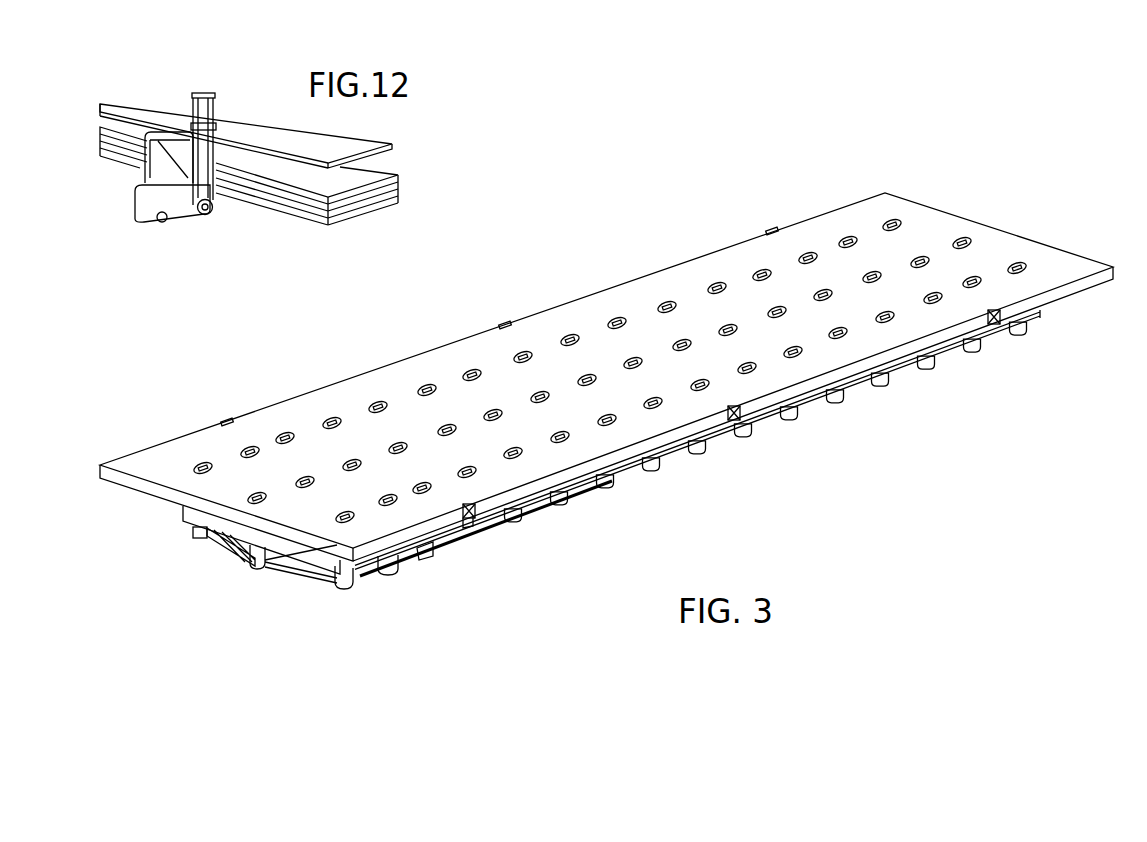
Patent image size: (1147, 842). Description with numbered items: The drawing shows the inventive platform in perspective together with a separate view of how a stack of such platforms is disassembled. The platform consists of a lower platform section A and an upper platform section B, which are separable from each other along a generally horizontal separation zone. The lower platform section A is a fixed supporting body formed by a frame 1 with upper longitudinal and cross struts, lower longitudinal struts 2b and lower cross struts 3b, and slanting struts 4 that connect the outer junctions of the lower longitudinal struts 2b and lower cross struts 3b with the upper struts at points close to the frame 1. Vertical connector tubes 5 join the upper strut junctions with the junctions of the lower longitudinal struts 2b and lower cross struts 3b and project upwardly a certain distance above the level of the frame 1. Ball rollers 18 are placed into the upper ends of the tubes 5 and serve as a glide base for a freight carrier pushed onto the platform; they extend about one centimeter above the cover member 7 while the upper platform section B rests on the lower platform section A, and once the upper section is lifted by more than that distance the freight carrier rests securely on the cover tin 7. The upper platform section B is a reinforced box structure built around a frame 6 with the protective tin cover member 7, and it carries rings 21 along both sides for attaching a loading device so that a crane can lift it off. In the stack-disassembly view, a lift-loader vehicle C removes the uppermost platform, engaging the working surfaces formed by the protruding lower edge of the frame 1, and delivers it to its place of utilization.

In FIG. 3, the frame 1 is at (218, 528).
In FIG. 3, the lower longitudinal struts 2b is at (541, 520).
In FIG. 3, the lower cross struts 3b is at (292, 572).
In FIG. 3, the slanting struts 4 is at (616, 483).
In FIG. 3, the vertical connector tubes 5 is at (351, 585).
In FIG. 3, the frame 6 is at (152, 490).
In FIG. 3, the protective tin cover member 7 is at (365, 385).
In FIG. 3, the ball rollers 18 is at (964, 240).
In FIG. 3, the rings 21 is at (224, 420).
In FIG. 12, the lower platform section A is at (343, 140).
In FIG. 3, the lower platform section A is at (862, 380).
In FIG. 12, the upper platform section B is at (403, 208).
In FIG. 3, the upper platform section B is at (606, 370).
In FIG. 12, the lift-loader vehicle C is at (181, 224).